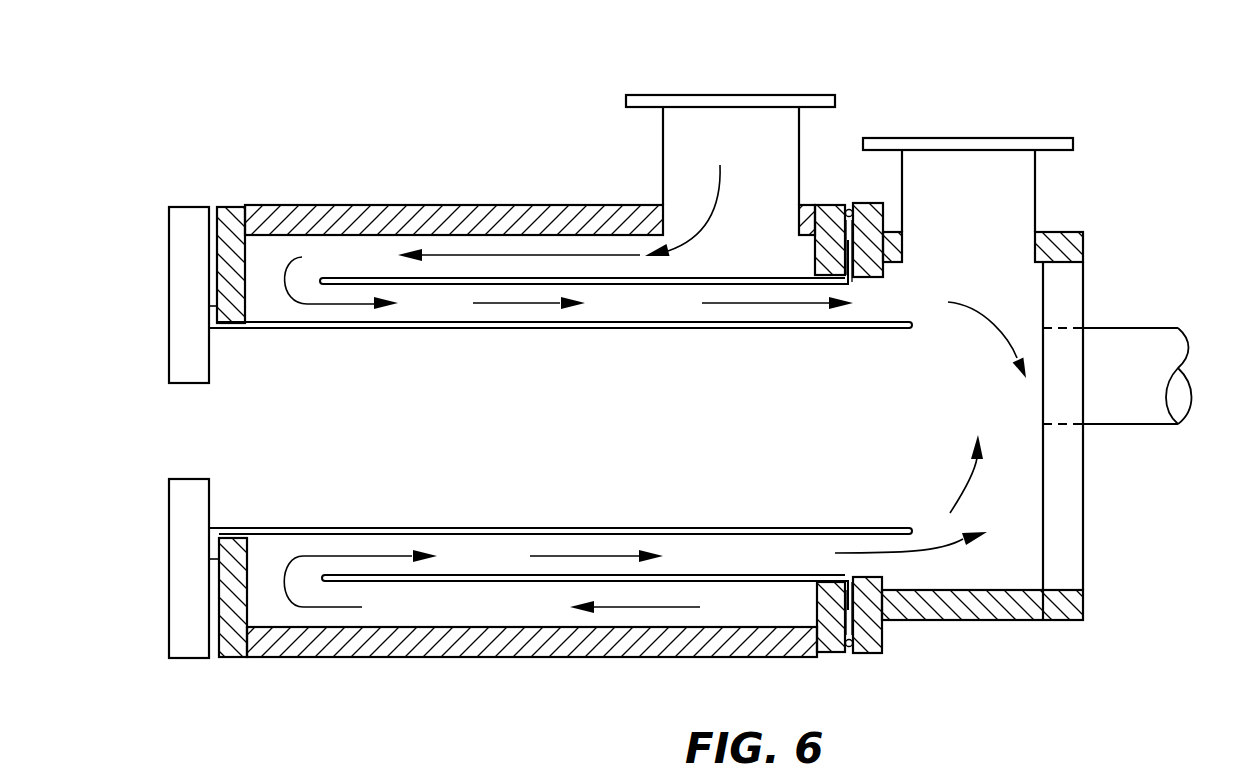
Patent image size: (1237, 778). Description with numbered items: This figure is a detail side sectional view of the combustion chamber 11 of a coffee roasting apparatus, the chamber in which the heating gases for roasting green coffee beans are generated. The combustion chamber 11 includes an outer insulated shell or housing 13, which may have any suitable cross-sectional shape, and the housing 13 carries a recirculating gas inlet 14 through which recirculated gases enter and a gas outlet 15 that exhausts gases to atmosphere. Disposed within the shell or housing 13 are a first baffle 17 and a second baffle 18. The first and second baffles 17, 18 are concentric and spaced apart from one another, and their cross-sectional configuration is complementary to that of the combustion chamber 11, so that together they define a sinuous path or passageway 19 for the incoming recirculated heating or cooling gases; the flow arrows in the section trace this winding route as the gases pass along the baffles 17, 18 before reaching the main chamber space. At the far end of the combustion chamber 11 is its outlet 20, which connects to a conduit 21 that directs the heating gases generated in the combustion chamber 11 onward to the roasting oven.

The combustion chamber 11 is at (521, 160).
The outer insulated shell or housing 13 is at (297, 205).
The recirculating gas inlet 14 is at (800, 133).
The gas outlet 15 is at (1043, 198).
The first baffle 17 is at (432, 285).
The second baffle 18 is at (428, 318).
The sinuous path or passageway 19 is at (677, 302).
The outlet of the combustion chamber 20 is at (1043, 356).
The conduit 21 is at (1155, 350).